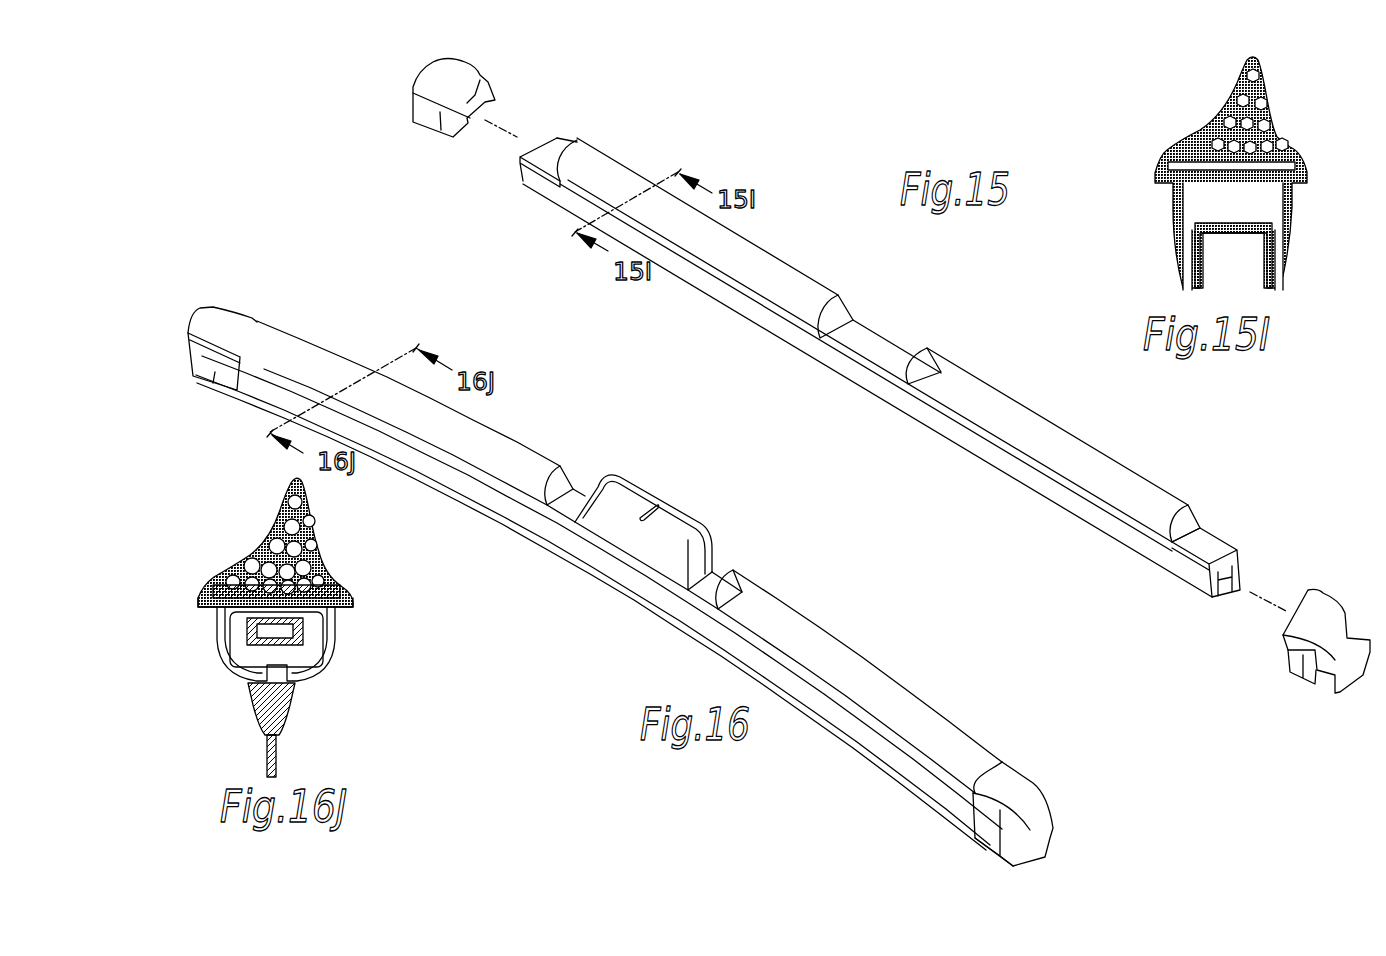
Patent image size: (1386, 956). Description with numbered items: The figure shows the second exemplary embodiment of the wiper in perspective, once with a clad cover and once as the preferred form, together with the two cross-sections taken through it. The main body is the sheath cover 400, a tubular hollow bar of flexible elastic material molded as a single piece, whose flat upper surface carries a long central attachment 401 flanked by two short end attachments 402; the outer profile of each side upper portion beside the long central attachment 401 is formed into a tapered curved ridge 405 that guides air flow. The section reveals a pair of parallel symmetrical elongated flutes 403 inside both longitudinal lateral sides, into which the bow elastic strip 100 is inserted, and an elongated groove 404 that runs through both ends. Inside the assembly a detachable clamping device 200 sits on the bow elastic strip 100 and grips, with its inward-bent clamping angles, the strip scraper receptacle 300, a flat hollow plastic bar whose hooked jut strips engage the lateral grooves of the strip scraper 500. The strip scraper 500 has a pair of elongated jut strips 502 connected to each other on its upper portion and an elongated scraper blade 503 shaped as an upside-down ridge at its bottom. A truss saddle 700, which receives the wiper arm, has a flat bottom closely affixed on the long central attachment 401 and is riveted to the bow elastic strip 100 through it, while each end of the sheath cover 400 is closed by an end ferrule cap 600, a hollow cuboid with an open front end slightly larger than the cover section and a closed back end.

In FIG. 15, the sheath cover 400 is at (980, 470).
In FIG. 16J, the sheath cover 400 is at (235, 560).
In FIG. 15, the long central attachment 401 is at (882, 355).
In FIG. 15, the short end attachment 402 is at (555, 150).
In FIG. 15I, the elongated flute 403 is at (1160, 158).
In FIG. 15I, the elongated groove 404 is at (1233, 262).
In FIG. 15, the tapered curved ridge 405 is at (798, 288).
In FIG. 15I, the tapered curved ridge 405 is at (1262, 60).
In FIG. 16, the tapered curved ridge 405 is at (530, 467).
In FIG. 16J, the bow elastic strip 100 is at (353, 588).
In FIG. 16J, the detachable clamping device 200 is at (320, 637).
In FIG. 16J, the strip scraper receptacle 300 is at (333, 670).
In FIG. 16J, the strip scraper 500 is at (290, 705).
In FIG. 16J, the elongated jut strip 502 is at (237, 680).
In FIG. 16, the elongated scraper blade 503 is at (610, 583).
In FIG. 16J, the elongated scraper blade 503 is at (280, 737).
In FIG. 16J, the end ferrule cap 600 is at (320, 540).
In FIG. 16, the truss saddle 700 is at (628, 492).